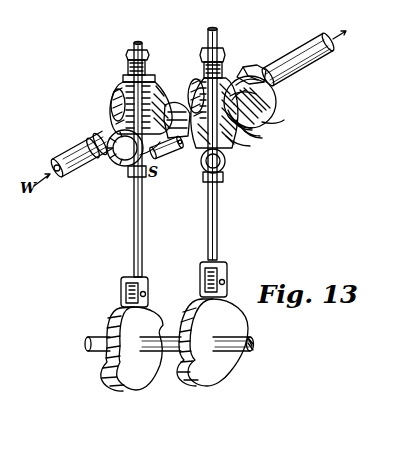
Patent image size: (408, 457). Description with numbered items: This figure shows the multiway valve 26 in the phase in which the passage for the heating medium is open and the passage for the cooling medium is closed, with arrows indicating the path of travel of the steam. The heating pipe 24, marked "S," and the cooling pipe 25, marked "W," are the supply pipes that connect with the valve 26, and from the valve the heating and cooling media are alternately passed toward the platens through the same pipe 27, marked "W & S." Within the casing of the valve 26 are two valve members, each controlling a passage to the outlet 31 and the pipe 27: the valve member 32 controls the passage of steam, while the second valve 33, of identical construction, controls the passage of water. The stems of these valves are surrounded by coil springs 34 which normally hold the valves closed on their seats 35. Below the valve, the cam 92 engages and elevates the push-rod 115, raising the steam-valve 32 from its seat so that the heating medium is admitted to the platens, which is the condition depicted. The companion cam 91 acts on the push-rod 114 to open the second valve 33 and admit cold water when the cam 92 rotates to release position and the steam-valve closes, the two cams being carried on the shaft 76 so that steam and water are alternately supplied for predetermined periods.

The heating pipe 24 is at (182, 158).
The cooling pipe 25 is at (74, 160).
The multiway valve 26 is at (272, 110).
The pipe 27 is at (290, 58).
The outlet 31 is at (268, 72).
The valve member 32 is at (252, 135).
The second valve 33 is at (122, 155).
The coil springs 34 is at (152, 106).
The seats 35 is at (147, 162).
The shaft 76 is at (170, 337).
The cam 91 is at (140, 381).
The cam 92 is at (215, 374).
The push-rod 114 is at (133, 235).
The push-rod 115 is at (217, 233).